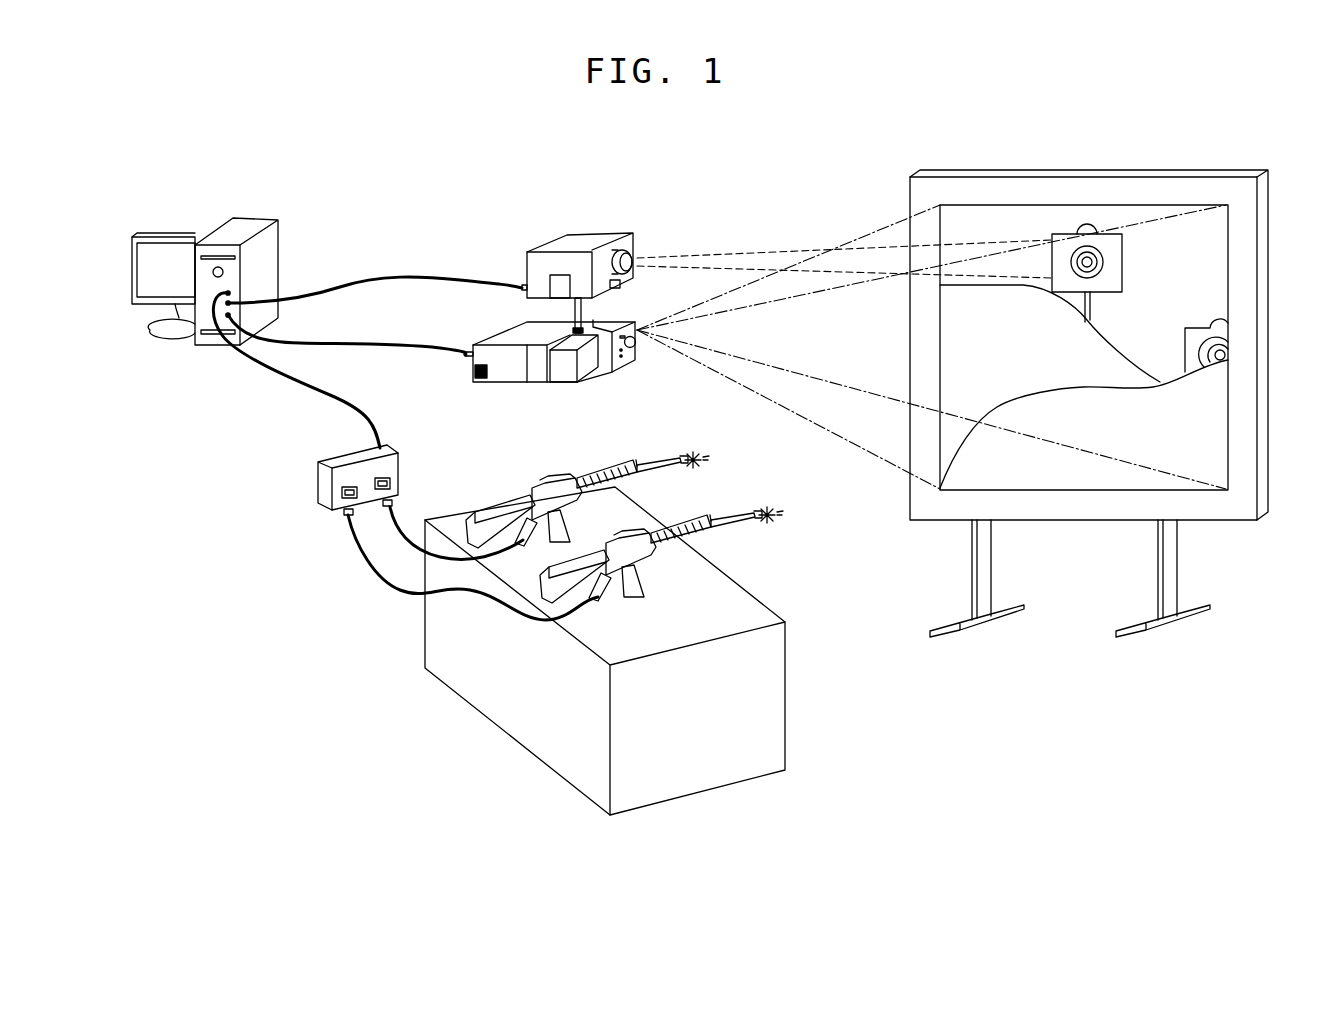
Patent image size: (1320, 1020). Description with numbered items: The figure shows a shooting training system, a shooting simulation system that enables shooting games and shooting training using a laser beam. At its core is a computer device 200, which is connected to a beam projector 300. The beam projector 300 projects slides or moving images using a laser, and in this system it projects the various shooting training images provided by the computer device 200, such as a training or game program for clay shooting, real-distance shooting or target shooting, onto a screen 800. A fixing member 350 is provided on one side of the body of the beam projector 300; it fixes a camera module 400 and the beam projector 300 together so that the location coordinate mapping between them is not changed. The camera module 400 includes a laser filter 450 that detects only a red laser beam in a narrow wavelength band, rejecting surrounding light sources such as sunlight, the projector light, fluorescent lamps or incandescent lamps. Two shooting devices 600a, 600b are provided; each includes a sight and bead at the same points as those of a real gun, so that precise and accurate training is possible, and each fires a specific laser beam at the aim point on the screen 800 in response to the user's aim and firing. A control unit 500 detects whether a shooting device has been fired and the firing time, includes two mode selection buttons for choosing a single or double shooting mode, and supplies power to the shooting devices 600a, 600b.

The computer device 200 is at (249, 219).
The beam projector 300 is at (505, 383).
The fixing member 350 is at (535, 360).
The camera module 400 is at (582, 243).
The laser filter 450 is at (632, 252).
The control unit 500 is at (340, 456).
The shooting device 600a is at (495, 523).
The shooting device 600b is at (578, 565).
The screen 800 is at (1022, 218).